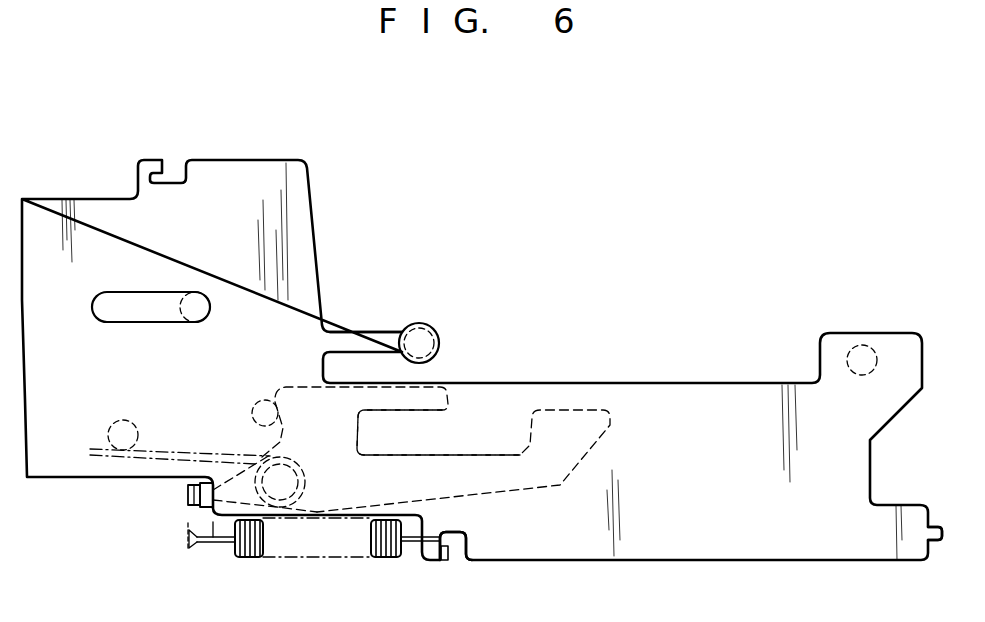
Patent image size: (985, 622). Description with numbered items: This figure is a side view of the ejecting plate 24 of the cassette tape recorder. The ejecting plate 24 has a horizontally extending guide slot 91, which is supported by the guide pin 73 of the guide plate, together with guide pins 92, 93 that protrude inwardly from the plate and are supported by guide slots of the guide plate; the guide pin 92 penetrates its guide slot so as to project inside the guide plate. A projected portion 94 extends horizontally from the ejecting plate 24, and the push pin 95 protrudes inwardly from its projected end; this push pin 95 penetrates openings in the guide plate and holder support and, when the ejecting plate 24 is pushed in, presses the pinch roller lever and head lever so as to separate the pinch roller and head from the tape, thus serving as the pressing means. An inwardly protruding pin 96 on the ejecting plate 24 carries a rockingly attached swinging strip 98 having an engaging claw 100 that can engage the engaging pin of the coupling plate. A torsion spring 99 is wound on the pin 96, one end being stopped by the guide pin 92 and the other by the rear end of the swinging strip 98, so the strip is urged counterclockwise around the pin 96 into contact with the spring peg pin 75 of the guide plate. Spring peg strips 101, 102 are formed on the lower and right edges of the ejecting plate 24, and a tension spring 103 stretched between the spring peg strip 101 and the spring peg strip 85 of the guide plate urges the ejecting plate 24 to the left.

The ejecting plate 24 is at (318, 244).
The guide slot 91 is at (122, 292).
The guide pin 73 is at (200, 292).
The projected portion 94 is at (363, 332).
The push pin 95 is at (436, 337).
The guide pin 93 is at (855, 372).
The spring peg strip 102 is at (938, 522).
The guide pin 92 is at (123, 429).
The spring peg pin 75 is at (257, 402).
The torsion spring 99 is at (190, 456).
The pin 96 is at (314, 470).
The engaging claw 100 is at (533, 431).
The swinging strip 98 is at (381, 457).
The spring peg strip 85 is at (213, 548).
The tension spring 103 is at (263, 557).
The spring peg strip 101 is at (445, 567).